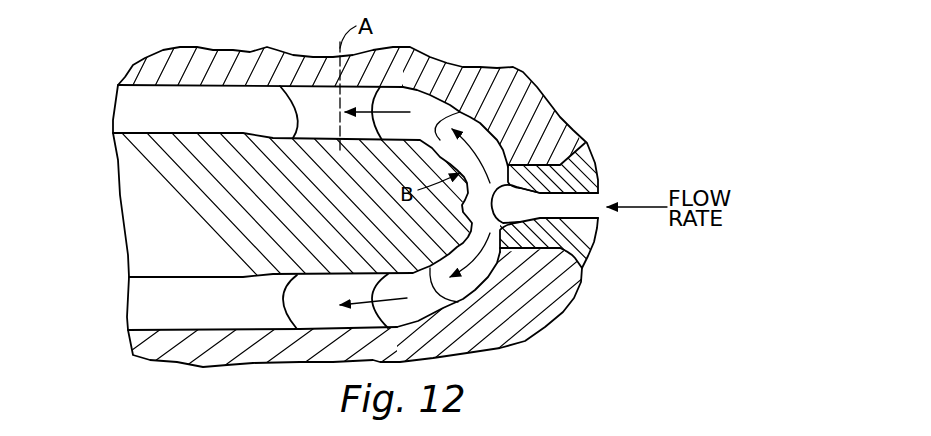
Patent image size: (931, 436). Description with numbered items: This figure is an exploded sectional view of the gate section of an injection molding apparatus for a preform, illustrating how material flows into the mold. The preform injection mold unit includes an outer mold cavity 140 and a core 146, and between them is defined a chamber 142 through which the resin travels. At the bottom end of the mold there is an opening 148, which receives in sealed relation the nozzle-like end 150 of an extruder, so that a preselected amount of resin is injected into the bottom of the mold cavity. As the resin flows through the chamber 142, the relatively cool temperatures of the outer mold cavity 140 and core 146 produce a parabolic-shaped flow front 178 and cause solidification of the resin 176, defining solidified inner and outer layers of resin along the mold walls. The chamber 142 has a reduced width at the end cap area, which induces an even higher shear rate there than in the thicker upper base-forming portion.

The outer mold cavity 140 is at (430, 63).
The chamber 142 is at (430, 107).
The core 146 is at (142, 230).
The opening 148 is at (592, 252).
The nozzle-like end 150 is at (583, 177).
The solidified resin 176 is at (477, 133).
The parabolic-shaped flow front 178 is at (281, 86).